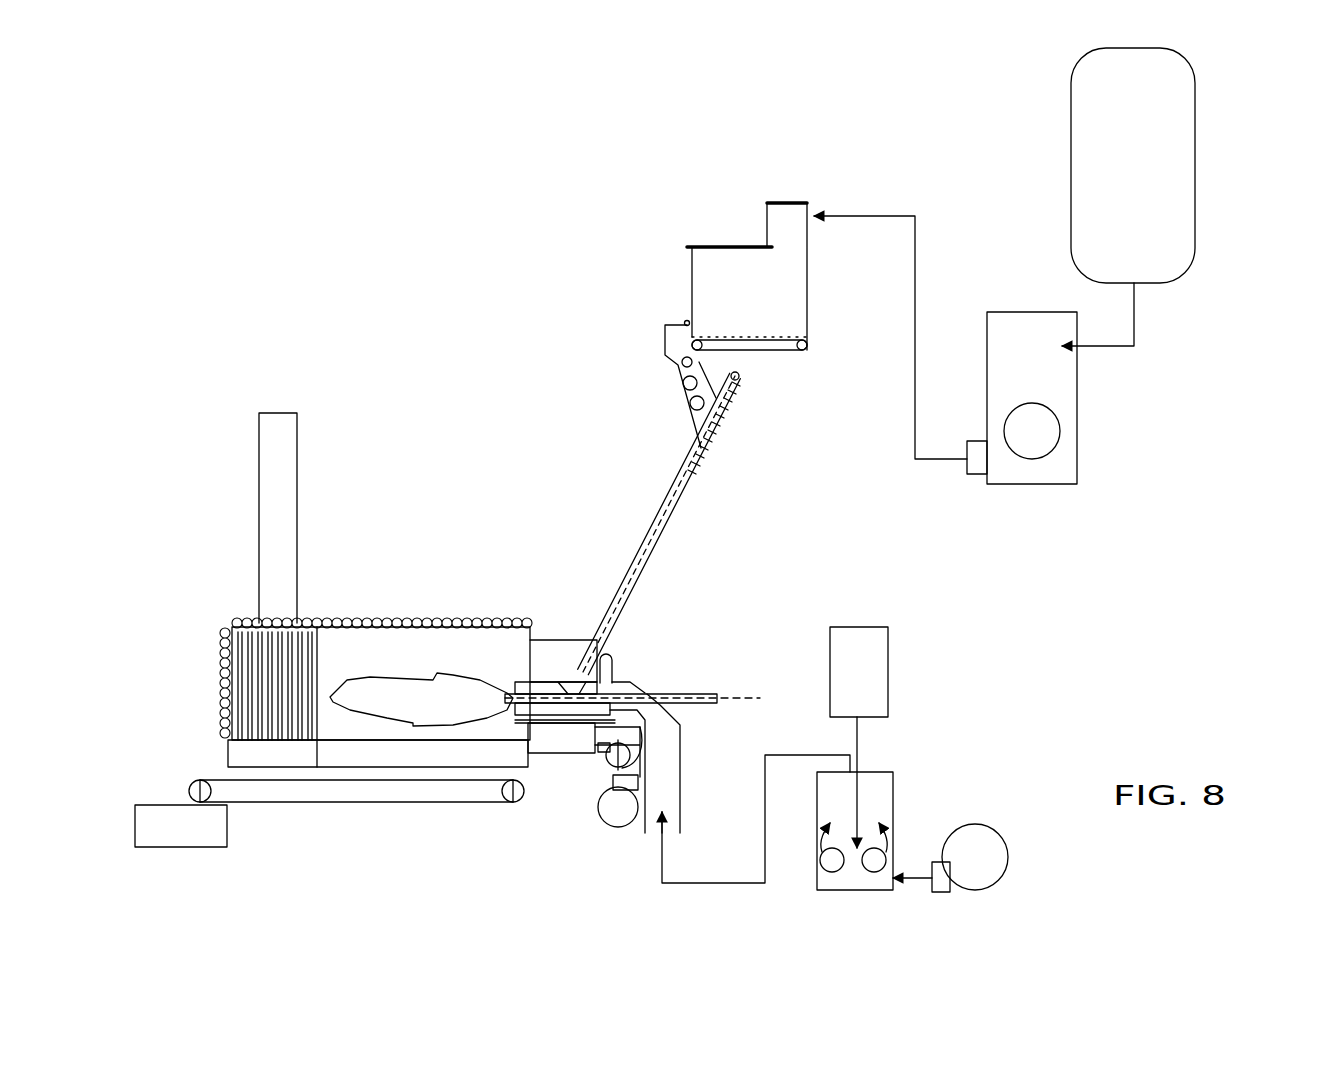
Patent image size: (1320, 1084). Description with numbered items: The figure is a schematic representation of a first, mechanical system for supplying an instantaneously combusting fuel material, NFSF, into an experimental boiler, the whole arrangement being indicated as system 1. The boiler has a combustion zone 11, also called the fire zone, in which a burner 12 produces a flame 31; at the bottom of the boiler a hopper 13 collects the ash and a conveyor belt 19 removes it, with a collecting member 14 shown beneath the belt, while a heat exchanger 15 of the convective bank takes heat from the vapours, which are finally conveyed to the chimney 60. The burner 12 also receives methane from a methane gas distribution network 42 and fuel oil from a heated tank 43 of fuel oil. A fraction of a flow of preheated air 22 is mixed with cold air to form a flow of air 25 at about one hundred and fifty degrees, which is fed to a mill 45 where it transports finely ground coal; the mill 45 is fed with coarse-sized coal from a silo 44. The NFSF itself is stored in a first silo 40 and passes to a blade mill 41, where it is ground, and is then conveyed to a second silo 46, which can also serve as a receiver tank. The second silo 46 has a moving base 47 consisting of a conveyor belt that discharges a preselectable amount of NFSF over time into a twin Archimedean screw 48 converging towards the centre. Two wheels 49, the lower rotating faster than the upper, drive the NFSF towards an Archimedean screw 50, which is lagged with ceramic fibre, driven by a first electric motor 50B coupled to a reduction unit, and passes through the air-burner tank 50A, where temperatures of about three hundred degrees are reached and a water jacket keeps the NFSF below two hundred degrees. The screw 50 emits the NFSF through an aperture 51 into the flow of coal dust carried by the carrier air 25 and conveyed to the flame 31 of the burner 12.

The combustion apparatus 1 is at (373, 612).
The combustion zone 11 is at (488, 655).
The burner 12 is at (640, 680).
The hopper 13 is at (343, 753).
The ash receptacle 14 is at (172, 829).
The heat exchanger 15 is at (275, 680).
The conveyor belt 19 is at (420, 790).
The flow of preheated air 22 is at (615, 808).
The flow of air 25 is at (715, 885).
The flame 31 is at (425, 713).
The first silo 40 is at (1170, 183).
The blade mill 41 is at (1060, 392).
The methane gas distribution network 42 is at (553, 725).
The heated tank of fuel oil 43 is at (678, 693).
The silo 44 is at (878, 678).
The mill 45 is at (878, 792).
The second silo 46 is at (790, 290).
The moving base 47 is at (770, 348).
The twin Archimedean screw 48 is at (682, 364).
The wheels 49 is at (683, 383).
The Archimedean screw 50 is at (660, 530).
The air-burner tank 50A is at (550, 652).
The first electric motor 50B is at (740, 377).
The aperture 51 is at (569, 692).
The chimney 60 is at (278, 497).